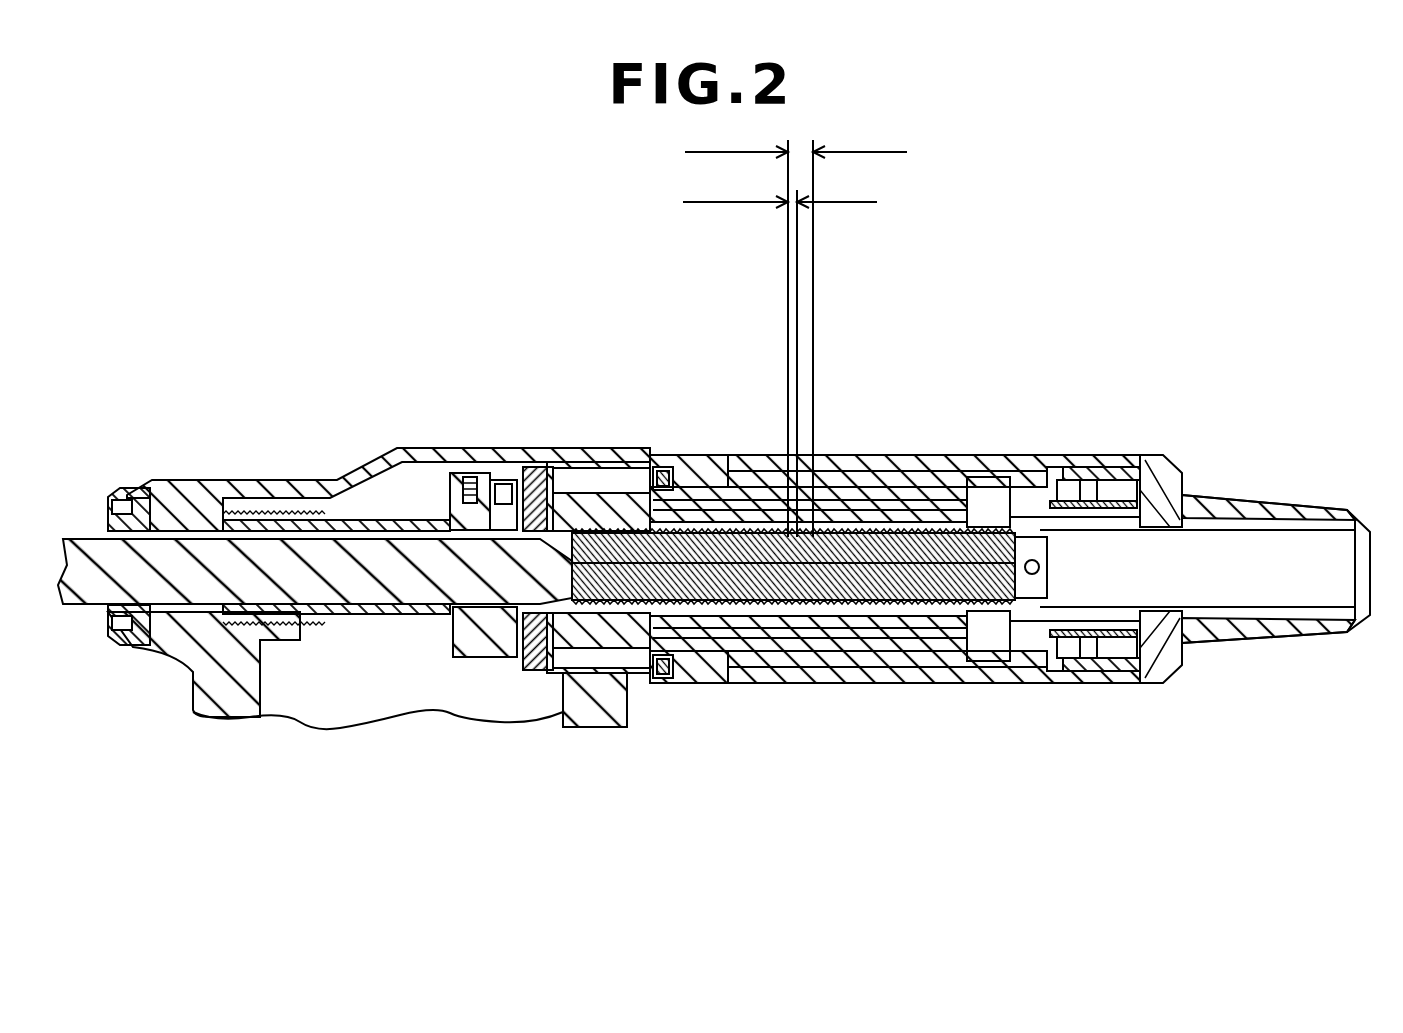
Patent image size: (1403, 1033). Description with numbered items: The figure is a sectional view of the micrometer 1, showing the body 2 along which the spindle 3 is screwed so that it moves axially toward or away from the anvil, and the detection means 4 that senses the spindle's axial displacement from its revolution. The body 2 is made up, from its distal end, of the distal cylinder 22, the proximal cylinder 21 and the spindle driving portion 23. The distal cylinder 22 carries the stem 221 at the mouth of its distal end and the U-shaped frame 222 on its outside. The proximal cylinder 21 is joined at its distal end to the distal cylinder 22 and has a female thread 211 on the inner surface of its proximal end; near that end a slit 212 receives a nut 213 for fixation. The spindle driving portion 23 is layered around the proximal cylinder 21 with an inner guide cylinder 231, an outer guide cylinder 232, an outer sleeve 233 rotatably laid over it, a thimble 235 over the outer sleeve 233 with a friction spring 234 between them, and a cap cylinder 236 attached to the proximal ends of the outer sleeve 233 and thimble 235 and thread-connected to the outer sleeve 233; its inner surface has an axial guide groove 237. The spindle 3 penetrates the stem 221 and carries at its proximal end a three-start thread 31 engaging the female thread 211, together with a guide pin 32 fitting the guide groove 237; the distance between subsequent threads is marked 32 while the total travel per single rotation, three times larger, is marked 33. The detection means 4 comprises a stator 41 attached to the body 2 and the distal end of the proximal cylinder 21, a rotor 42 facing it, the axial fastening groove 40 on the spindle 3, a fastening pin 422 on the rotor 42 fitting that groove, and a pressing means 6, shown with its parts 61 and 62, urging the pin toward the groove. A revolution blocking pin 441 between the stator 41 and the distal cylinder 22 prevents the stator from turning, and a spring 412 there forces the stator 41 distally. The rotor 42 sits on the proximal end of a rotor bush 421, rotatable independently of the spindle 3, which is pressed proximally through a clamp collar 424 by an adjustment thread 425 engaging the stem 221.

The micrometer 1 is at (960, 279).
The body 2 is at (717, 356).
The spindle 3 is at (93, 538).
The detection means 4 is at (395, 345).
The pressing means 6 is at (505, 389).
The proximal cylinder 21 is at (750, 670).
The distal cylinder 22 is at (352, 478).
The spindle driving portion 23 is at (1049, 530).
The three-start thread 31 is at (768, 487).
The guide pin 32 is at (1022, 517).
The total moving distance 33 is at (814, 334).
The fastening groove 40 is at (402, 520).
The stator 41 is at (573, 462).
The rotor 42 is at (548, 465).
The lock nut 61 is at (498, 480).
The bolt 62 is at (468, 478).
The female thread 211 is at (888, 515).
The slit 212 is at (897, 515).
The nut 213 is at (975, 478).
The stem 221 is at (128, 527).
The U-shaped frame 222 is at (222, 715).
The inner guide cylinder 231 is at (822, 652).
The outer guide cylinder 232 is at (875, 652).
The outer sleeve 233 is at (943, 660).
The friction spring 234 is at (997, 660).
The thimble 235 is at (1040, 672).
The cap cylinder 236 is at (1172, 678).
The guide groove 237 is at (1180, 490).
The spring 412 is at (658, 467).
The rotor bush 421 is at (492, 658).
The fastening pin 422 is at (533, 467).
The clamp collar 424 is at (398, 614).
The adjustment thread 425 is at (315, 624).
The revolution blocking pin 441 is at (690, 458).